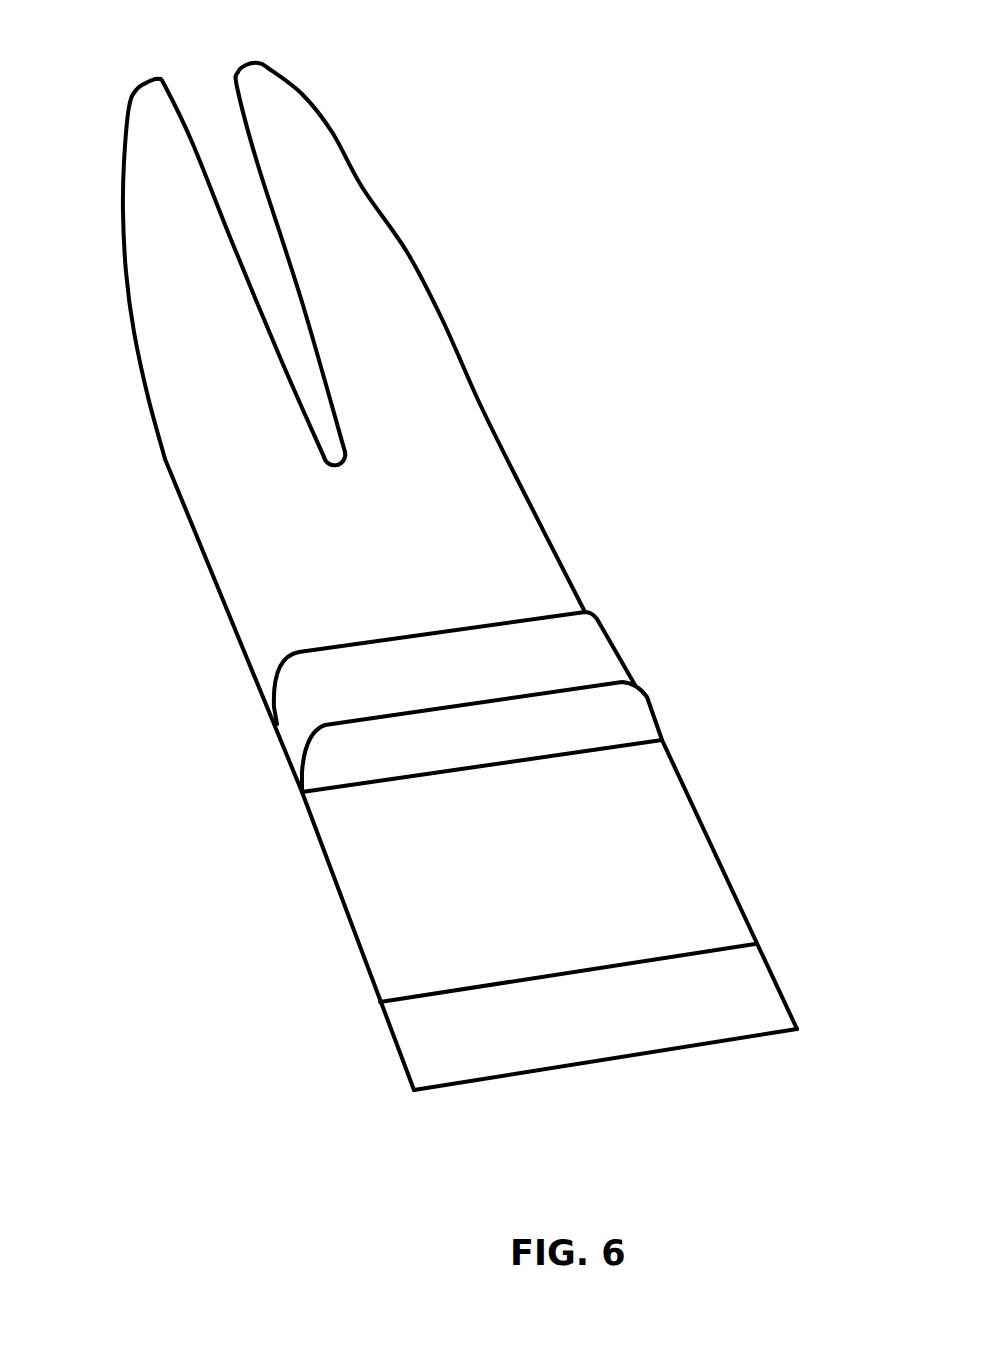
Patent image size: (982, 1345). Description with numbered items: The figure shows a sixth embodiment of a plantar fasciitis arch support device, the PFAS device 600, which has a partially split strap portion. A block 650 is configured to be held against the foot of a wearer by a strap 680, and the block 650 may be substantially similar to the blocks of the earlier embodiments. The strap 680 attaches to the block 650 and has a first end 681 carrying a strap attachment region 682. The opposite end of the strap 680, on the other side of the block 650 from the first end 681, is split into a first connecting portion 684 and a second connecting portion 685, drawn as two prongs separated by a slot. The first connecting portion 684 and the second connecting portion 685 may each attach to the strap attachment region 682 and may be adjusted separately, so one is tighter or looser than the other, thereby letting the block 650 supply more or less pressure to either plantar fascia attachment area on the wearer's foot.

The PFAS device 600 is at (274, 945).
The block 650 is at (643, 719).
The strap 680 is at (691, 841).
The first end 681 is at (392, 51).
The strap attachment region 682 is at (408, 1058).
The first connecting portion 684 is at (310, 130).
The second connecting portion 685 is at (133, 218).